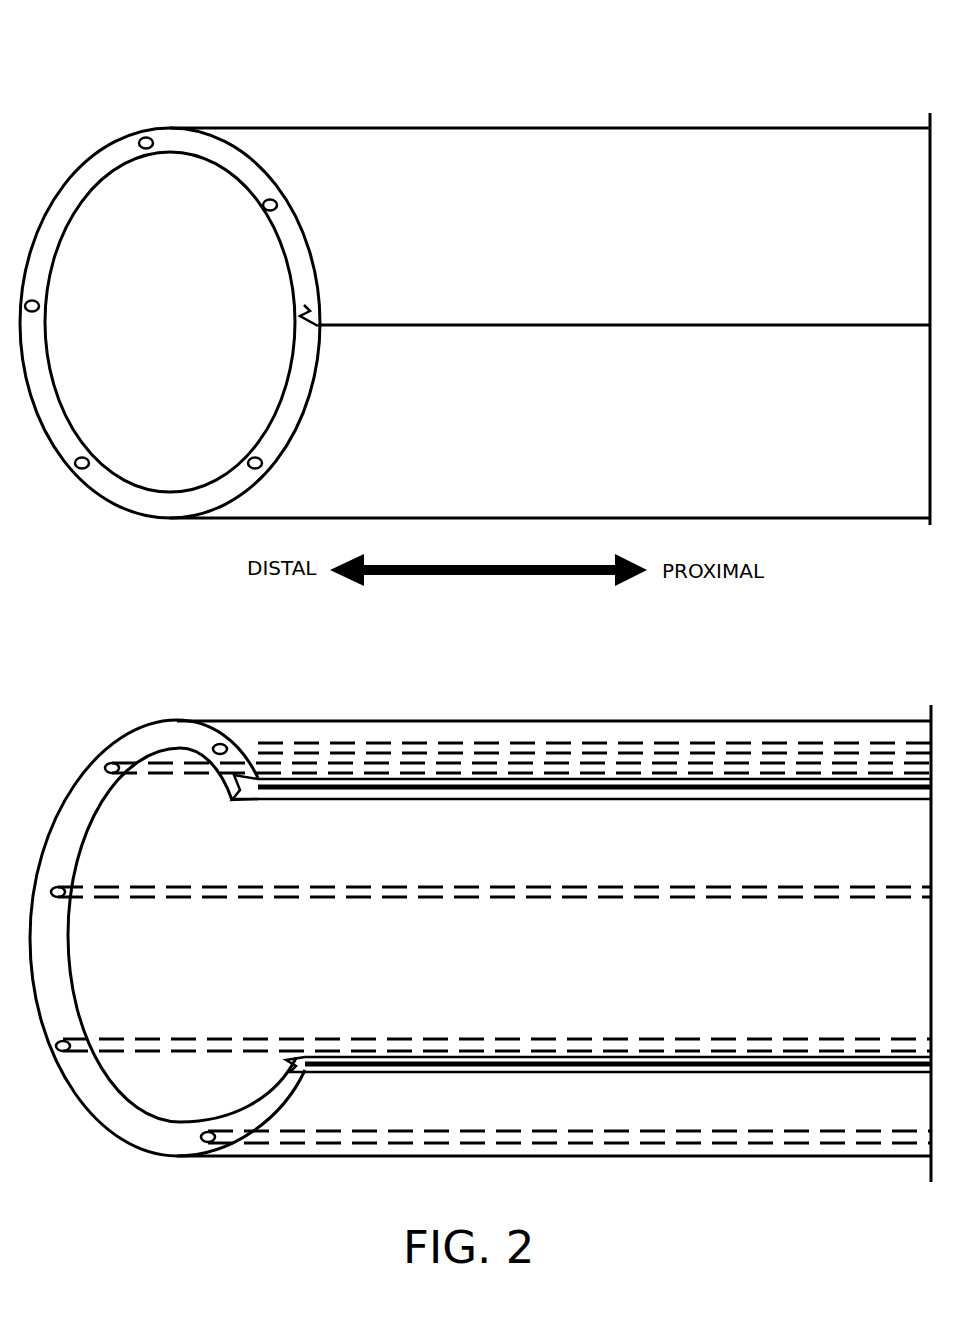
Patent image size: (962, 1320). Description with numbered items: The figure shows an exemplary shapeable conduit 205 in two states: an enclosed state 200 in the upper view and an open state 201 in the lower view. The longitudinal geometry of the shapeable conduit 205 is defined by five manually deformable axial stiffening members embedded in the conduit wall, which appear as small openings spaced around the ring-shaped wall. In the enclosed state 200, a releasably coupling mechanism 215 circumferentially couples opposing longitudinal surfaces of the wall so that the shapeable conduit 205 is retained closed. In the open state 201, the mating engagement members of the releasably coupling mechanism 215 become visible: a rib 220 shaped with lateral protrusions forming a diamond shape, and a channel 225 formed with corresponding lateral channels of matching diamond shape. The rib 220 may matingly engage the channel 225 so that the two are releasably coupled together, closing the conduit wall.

The enclosed state 200 is at (165, 46).
The open state 201 is at (165, 680).
The shapeable conduit 205 is at (462, 128).
The releasably coupling mechanism 215 is at (397, 325).
The rib 220 is at (325, 1057).
The channel 225 is at (232, 790).